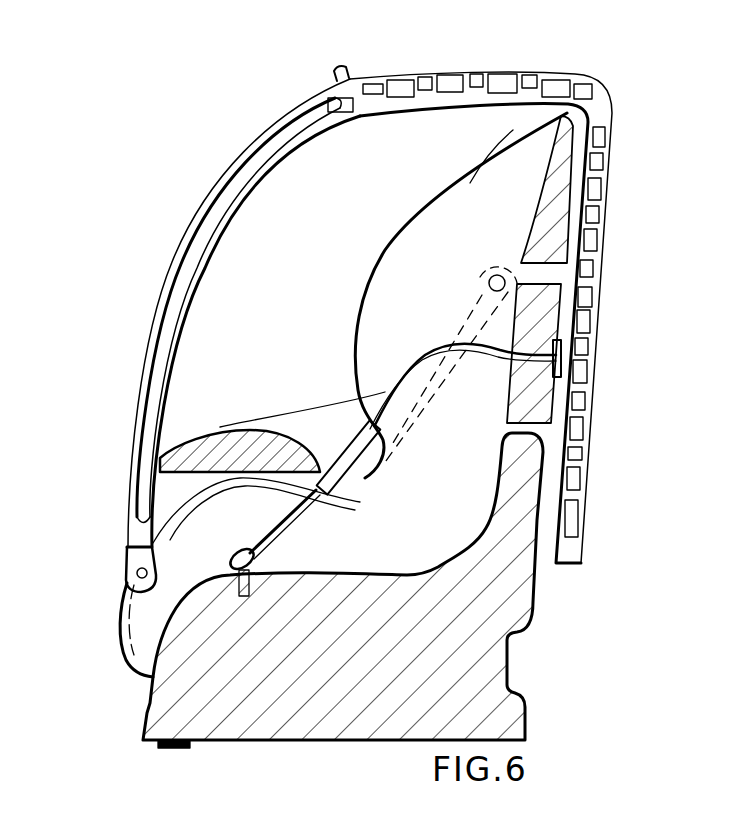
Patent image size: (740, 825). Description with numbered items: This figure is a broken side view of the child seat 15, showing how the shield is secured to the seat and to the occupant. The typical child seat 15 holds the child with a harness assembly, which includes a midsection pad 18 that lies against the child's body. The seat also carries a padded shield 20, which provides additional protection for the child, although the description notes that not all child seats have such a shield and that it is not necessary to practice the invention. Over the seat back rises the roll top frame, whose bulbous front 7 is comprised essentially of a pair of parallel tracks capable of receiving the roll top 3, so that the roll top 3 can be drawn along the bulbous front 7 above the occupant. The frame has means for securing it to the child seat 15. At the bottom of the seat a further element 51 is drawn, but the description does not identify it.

The roll top 3 is at (583, 60).
The bulbous front 7 is at (233, 168).
The child seat 15 is at (122, 642).
The midsection pad 18 is at (340, 447).
The padded shield 20 is at (245, 430).
The foot pad 51 is at (140, 763).